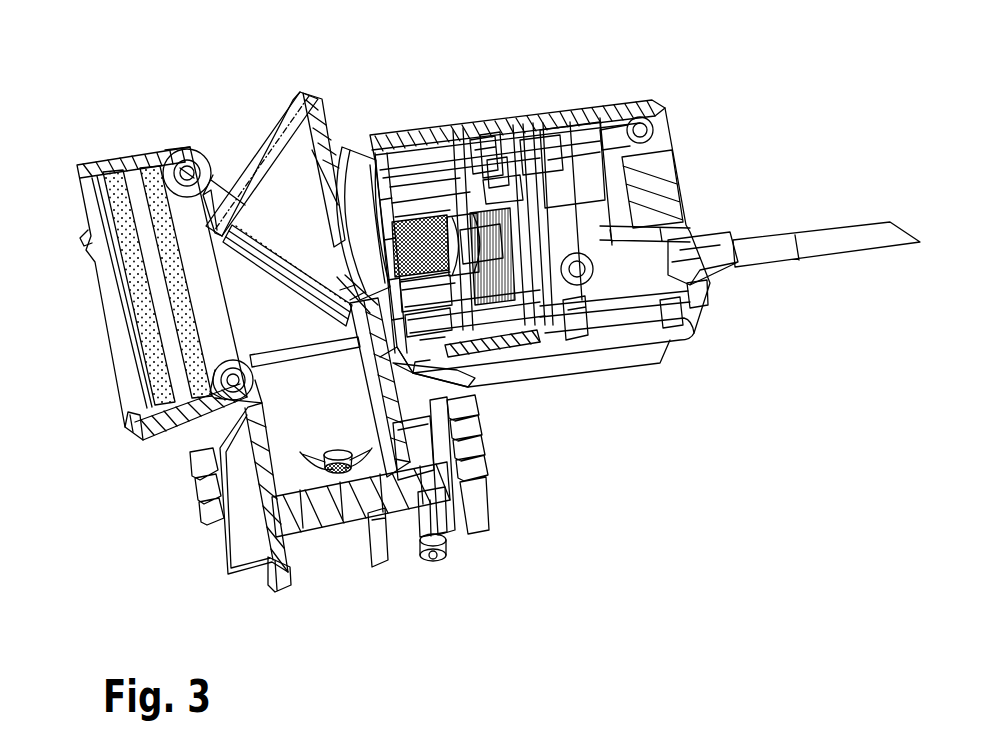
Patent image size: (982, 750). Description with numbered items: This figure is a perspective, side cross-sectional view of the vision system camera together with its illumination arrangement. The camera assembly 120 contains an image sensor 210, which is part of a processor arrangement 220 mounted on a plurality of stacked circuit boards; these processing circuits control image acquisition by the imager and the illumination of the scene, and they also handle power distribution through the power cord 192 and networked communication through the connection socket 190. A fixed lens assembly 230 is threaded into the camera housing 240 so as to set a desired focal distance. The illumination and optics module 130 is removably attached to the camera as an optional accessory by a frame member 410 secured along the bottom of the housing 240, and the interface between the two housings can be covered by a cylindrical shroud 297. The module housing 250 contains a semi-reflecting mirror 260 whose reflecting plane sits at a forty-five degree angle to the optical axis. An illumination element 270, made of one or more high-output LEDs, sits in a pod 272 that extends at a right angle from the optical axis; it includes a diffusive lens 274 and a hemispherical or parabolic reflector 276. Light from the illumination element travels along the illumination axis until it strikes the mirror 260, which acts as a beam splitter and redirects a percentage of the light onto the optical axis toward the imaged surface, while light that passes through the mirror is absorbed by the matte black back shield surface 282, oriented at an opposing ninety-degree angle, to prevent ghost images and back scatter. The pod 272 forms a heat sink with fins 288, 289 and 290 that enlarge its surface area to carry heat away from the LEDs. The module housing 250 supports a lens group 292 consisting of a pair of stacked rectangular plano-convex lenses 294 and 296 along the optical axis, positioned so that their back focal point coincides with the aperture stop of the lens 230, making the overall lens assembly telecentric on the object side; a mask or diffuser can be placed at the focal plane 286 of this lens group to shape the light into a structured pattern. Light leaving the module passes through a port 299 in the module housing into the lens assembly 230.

The camera assembly 120 is at (563, 107).
The illumination and optics module 130 is at (257, 126).
The connection socket 190 is at (686, 178).
The power cord 192 is at (724, 280).
The image sensor 210 is at (560, 140).
The processor arrangement 220 is at (490, 135).
The fixed lens assembly 230 is at (350, 150).
The housing 240 is at (480, 130).
The module housing 250 is at (277, 122).
The semi-reflecting mirror 260 is at (288, 280).
The illumination element 270 is at (325, 462).
The pod 272 is at (349, 542).
The diffusive lens 274 is at (338, 450).
The reflector 276 is at (318, 470).
The back shield reflecting surface 282 is at (326, 125).
The focal plane 286 is at (294, 374).
The heat sink fins 288 is at (202, 516).
The heat sink fins 289 is at (275, 584).
The heat sink fins 290 is at (380, 562).
The lens group 292 is at (126, 350).
The lens 294 is at (128, 282).
The lens 296 is at (170, 254).
The cylindrical shroud 297 is at (397, 365).
The port 299 is at (278, 160).
The frame member 410 is at (625, 365).